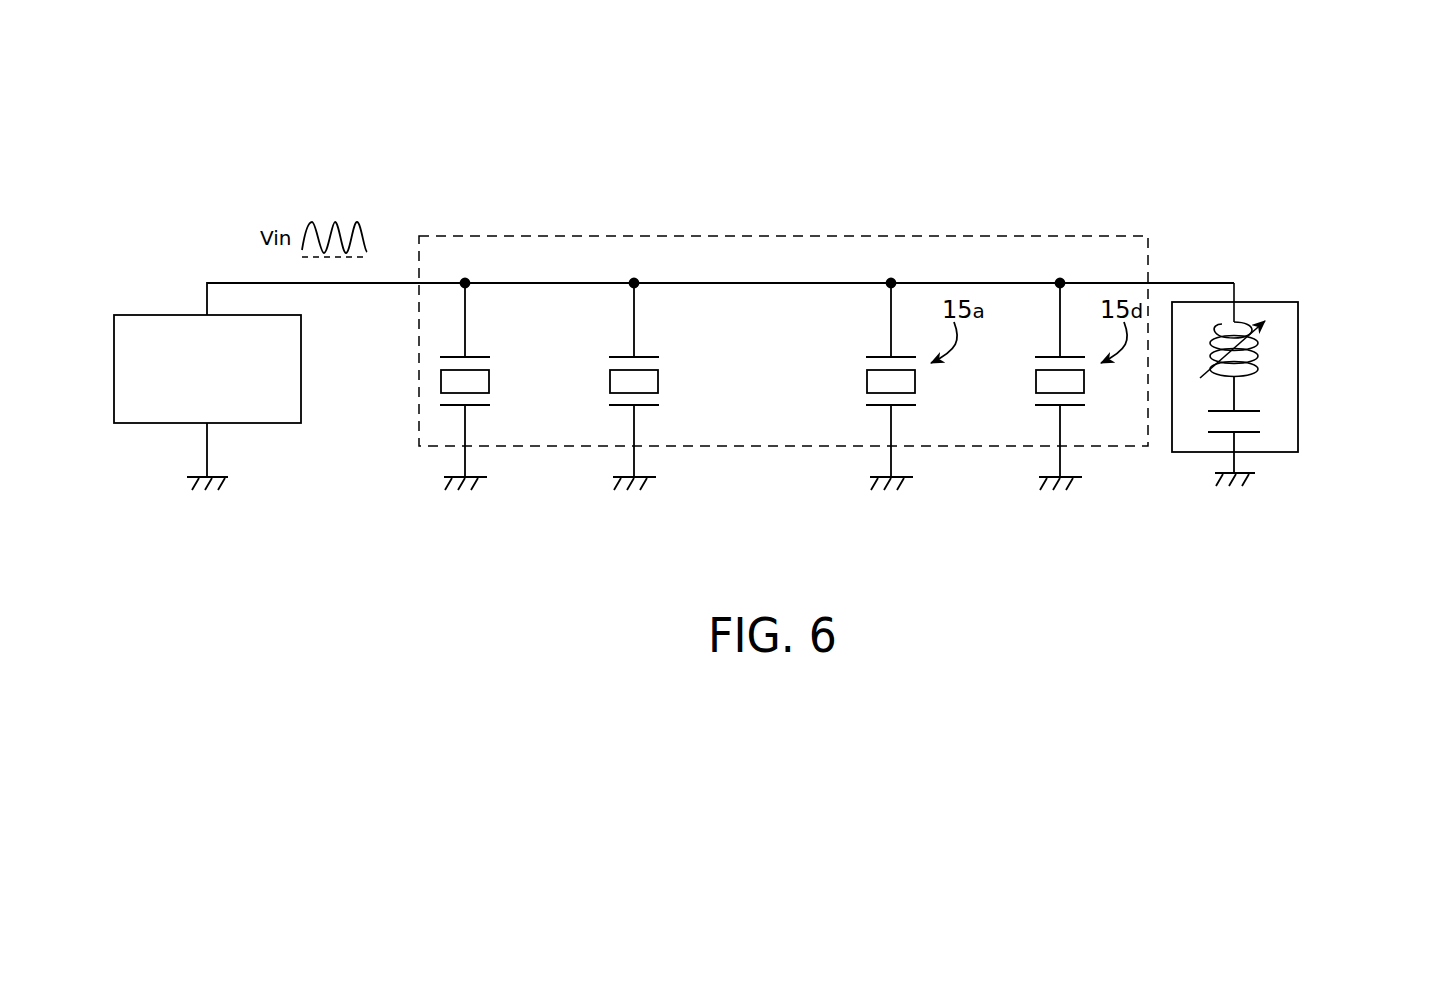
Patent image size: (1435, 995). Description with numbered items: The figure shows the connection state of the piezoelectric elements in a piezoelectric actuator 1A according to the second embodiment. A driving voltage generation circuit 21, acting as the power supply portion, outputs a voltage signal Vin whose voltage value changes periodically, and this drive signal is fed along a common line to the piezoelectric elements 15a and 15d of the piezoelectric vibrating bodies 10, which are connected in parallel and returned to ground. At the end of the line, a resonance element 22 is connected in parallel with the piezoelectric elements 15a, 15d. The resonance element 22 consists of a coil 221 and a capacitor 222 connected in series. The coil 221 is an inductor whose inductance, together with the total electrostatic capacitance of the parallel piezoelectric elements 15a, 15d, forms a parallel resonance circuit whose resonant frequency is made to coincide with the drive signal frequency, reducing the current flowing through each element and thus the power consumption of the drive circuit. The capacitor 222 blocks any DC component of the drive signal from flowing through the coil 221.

The piezoelectric actuator 1A is at (985, 146).
The piezoelectric vibrating body 10 is at (1060, 236).
The piezoelectric element 15a is at (505, 363).
The piezoelectric element 15d is at (674, 363).
The driving voltage generation circuit 21 is at (262, 425).
The resonance element 22 is at (1296, 374).
The coil 221 is at (1258, 348).
The capacitor 222 is at (1246, 409).